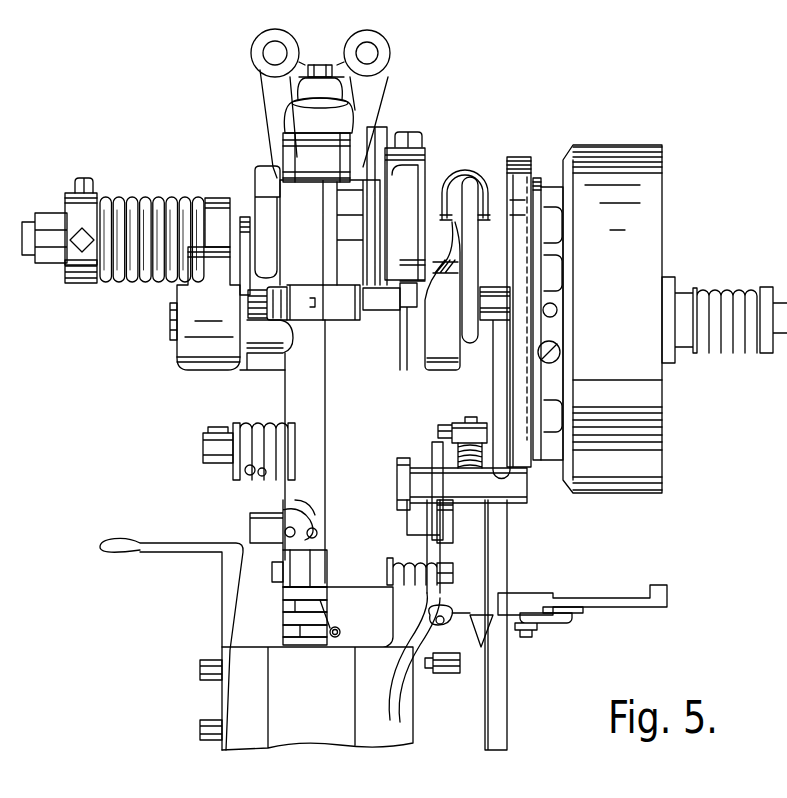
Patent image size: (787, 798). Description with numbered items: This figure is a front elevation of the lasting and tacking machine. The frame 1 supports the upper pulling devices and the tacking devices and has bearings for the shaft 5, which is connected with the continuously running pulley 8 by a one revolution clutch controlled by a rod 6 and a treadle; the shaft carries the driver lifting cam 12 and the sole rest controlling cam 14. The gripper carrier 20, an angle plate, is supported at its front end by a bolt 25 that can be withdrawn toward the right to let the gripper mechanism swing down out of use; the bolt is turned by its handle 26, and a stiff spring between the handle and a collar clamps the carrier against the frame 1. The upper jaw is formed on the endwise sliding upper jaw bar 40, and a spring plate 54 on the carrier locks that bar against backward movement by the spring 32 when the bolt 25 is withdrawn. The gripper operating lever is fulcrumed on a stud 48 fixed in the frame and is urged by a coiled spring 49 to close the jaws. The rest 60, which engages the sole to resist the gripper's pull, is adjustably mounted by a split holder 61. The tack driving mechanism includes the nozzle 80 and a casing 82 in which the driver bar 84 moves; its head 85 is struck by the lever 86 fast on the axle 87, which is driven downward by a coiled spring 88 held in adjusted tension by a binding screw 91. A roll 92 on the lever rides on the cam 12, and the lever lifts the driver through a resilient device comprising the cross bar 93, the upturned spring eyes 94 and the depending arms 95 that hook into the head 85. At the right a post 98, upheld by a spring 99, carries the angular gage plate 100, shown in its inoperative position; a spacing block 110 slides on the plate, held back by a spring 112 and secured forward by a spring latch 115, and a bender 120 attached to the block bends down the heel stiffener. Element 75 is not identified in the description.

The frame 1 is at (470, 535).
The shaft 5 is at (172, 318).
The rod 6 is at (497, 683).
The pulley 8 is at (643, 462).
The driver lifting cam 12 is at (350, 250).
The sole rest controlling cam 14 is at (518, 170).
The gripper carrier 20 is at (300, 608).
The bolt 25 is at (453, 572).
The handle 26 is at (500, 515).
The spring 32 is at (333, 637).
The upper jaw bar 40 is at (290, 620).
The fulcrum stud 48 is at (213, 437).
The coiled spring 49 is at (240, 450).
The spring plate 54 is at (265, 553).
The rest 60 is at (290, 630).
The split holder 61 is at (290, 642).
The hub 75 is at (498, 385).
The nozzle 80 is at (307, 598).
The casing 82 is at (298, 385).
The driver bar 84 is at (310, 248).
The head 85 is at (283, 145).
The lever 86 is at (280, 117).
The axle 87 is at (33, 250).
The coiled spring 88 is at (105, 197).
The binding screw 91 is at (80, 177).
The roll 92 is at (408, 127).
The cross bar 93 is at (295, 72).
The upturned spring eyes 94 is at (373, 40).
The depending arms 95 is at (358, 103).
The post 98 is at (482, 418).
The spring 99 is at (482, 452).
The angular plate 100 is at (605, 600).
The spacing block 110 is at (570, 597).
The spring 112 is at (480, 685).
The spring latch 115 is at (480, 640).
The bender 120 is at (557, 622).